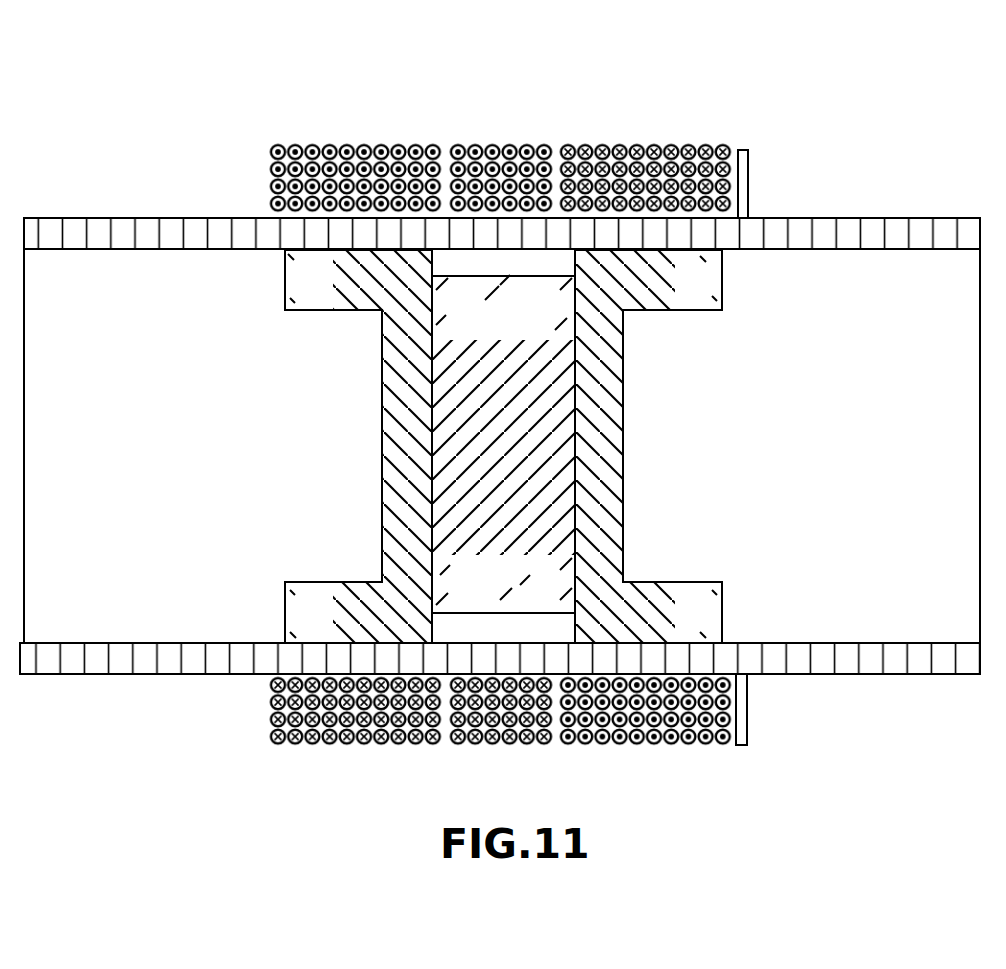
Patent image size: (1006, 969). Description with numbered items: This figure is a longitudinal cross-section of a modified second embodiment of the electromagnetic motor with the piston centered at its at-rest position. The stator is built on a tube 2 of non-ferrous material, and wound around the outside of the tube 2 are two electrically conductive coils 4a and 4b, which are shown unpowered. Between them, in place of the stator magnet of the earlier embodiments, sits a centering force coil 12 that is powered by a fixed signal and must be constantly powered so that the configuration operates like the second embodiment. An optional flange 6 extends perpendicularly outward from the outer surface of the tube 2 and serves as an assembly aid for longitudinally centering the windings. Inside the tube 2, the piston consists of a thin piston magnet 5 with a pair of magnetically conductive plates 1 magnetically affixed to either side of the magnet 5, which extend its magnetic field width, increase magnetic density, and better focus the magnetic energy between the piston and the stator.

The magnetically conductive plates 1 is at (290, 300).
The tube 2 is at (175, 218).
The electrically conductive coil 4a is at (318, 145).
The electrically conductive coil 4b is at (690, 145).
The piston magnet 5 is at (473, 455).
The flange 6 is at (748, 188).
The centering force coil 12 is at (510, 145).